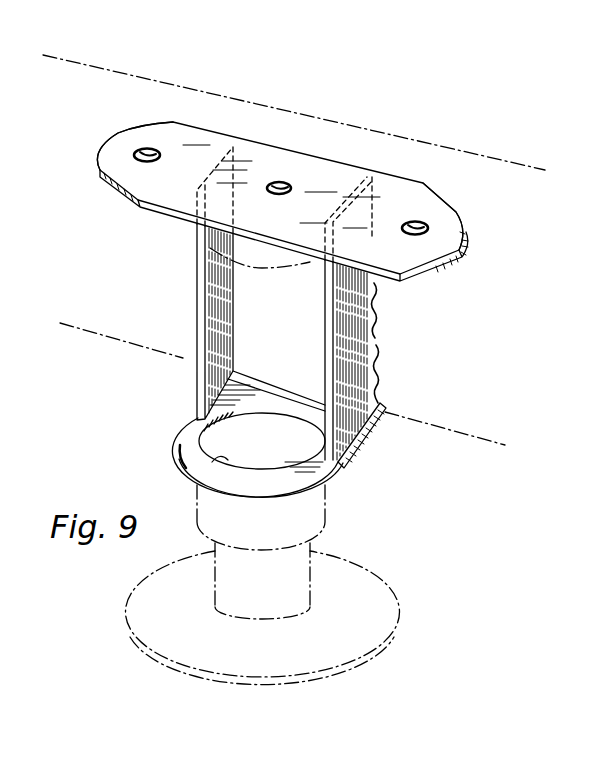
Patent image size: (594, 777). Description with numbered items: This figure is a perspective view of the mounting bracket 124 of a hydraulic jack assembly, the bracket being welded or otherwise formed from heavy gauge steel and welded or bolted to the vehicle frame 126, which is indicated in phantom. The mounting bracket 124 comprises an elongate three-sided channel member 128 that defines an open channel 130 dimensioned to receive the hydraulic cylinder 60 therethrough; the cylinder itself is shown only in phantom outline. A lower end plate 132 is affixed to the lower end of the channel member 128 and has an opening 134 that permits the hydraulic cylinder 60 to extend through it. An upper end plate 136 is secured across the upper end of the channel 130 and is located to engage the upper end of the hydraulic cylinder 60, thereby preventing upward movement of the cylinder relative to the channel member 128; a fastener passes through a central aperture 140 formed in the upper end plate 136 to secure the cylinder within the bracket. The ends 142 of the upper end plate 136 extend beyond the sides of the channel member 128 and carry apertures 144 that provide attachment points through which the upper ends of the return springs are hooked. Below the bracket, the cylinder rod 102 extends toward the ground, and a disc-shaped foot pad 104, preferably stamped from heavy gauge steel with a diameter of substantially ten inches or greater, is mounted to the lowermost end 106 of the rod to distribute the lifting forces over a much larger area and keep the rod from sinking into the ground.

The hydraulic cylinder 60 is at (292, 262).
The cylinder rod 102 is at (282, 603).
The foot pad 104 is at (372, 572).
The lowermost end 106 is at (228, 615).
The mounting bracket 124 is at (271, 360).
The vehicle frame 126 is at (120, 323).
The channel member 128 is at (343, 349).
The open channel 130 is at (213, 343).
The lower end plate 132 is at (183, 435).
The opening 134 is at (205, 462).
The upper end plate 136 is at (395, 191).
The central aperture 140 is at (284, 184).
The ends of the upper end plate 142 is at (113, 134).
The apertures 144 is at (140, 161).